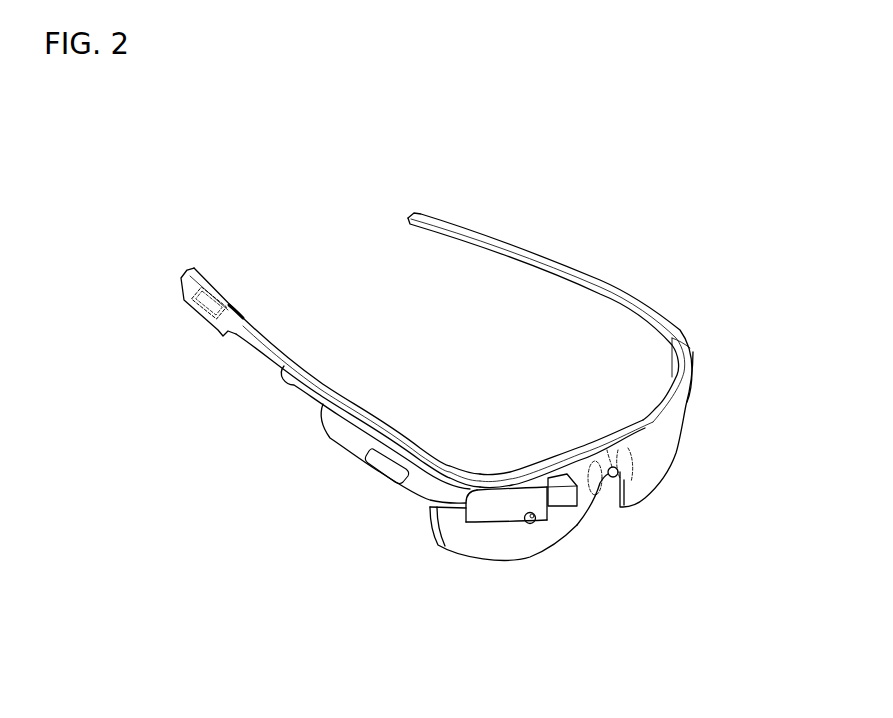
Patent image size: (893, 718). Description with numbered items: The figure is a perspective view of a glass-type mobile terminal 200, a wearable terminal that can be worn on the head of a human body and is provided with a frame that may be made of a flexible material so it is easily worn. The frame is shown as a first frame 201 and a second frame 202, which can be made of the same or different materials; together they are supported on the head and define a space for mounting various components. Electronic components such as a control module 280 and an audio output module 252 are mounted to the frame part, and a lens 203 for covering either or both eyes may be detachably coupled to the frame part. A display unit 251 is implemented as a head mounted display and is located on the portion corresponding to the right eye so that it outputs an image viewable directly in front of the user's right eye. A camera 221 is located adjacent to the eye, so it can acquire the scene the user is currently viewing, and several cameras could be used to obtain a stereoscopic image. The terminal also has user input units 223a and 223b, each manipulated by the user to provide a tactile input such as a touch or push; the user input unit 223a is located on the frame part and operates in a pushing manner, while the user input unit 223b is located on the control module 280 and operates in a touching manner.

The glass-type mobile terminal 200 is at (516, 188).
The first frame 201 is at (570, 272).
The second frame 202 is at (268, 343).
The lens 203 is at (665, 440).
The camera 221 is at (535, 524).
The user input unit 223a is at (235, 311).
The user input unit 223b is at (390, 470).
The display unit 251 is at (563, 500).
The audio output module 252 is at (202, 308).
The control module 280 is at (340, 437).